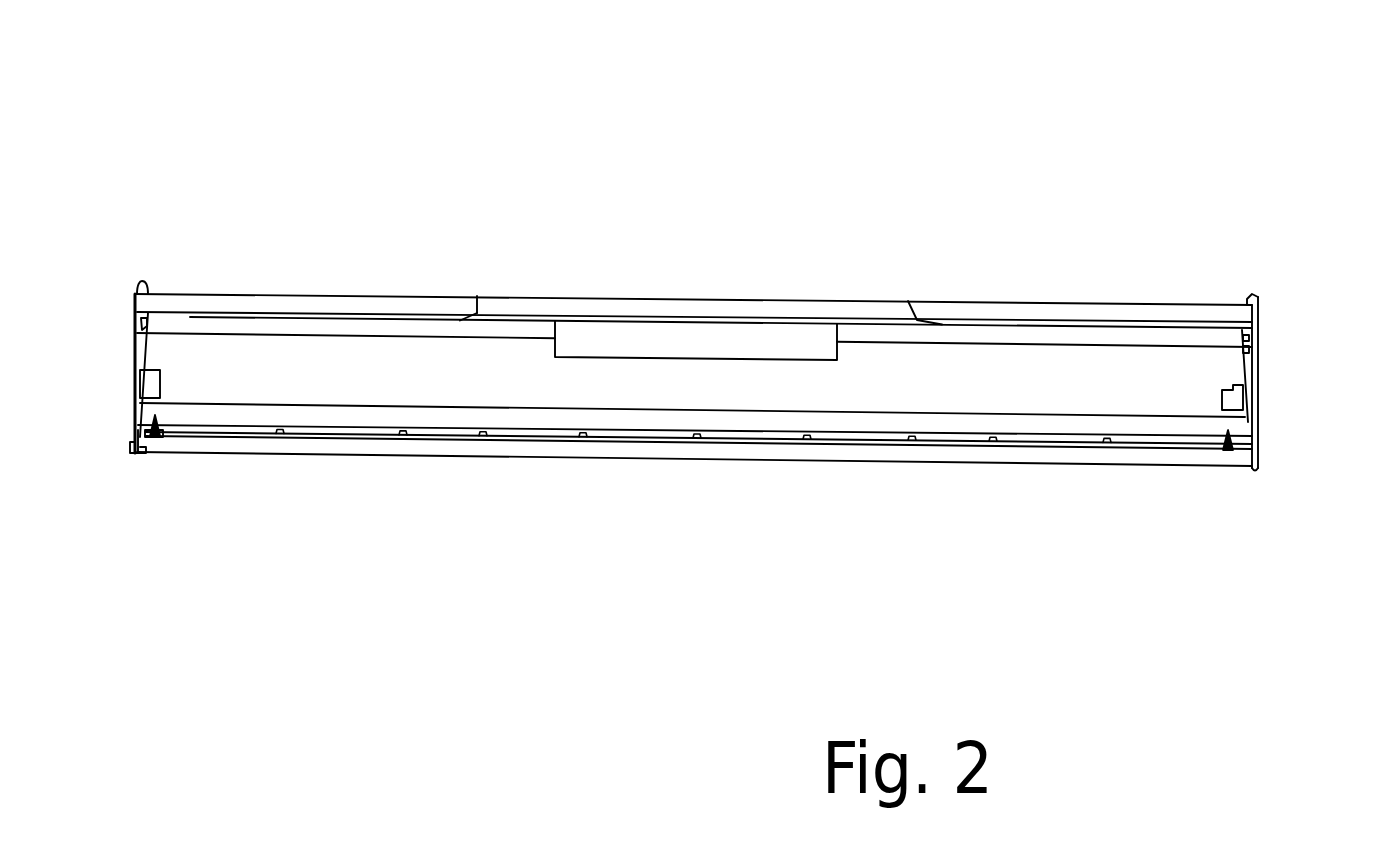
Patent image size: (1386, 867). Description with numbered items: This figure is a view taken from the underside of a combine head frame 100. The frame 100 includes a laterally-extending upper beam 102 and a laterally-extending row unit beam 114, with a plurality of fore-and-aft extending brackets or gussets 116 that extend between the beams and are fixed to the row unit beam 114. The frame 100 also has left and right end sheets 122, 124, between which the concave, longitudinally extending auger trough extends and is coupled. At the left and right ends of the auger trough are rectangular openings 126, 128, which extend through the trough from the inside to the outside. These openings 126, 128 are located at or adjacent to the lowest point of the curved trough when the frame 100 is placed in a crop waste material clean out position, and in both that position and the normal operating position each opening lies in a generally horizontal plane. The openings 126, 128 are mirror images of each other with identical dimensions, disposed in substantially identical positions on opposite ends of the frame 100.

The combine head frame 100 is at (754, 118).
The upper beam 102 is at (596, 308).
The row unit beam 114 is at (520, 448).
The brackets or gussets 116 is at (273, 437).
The left end sheet 122 is at (1260, 323).
The right end sheet 124 is at (133, 370).
The rectangular opening 126 is at (1227, 450).
The rectangular opening 128 is at (155, 436).